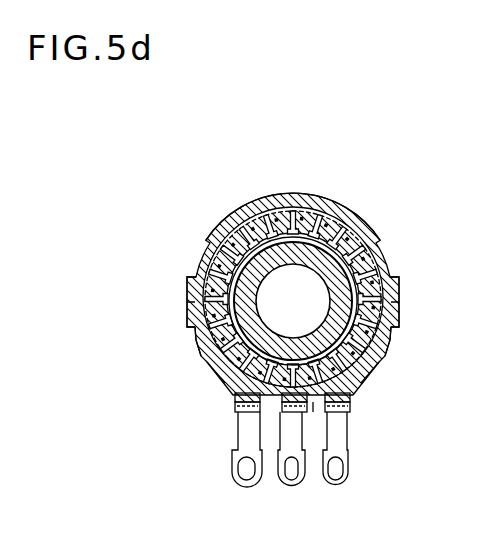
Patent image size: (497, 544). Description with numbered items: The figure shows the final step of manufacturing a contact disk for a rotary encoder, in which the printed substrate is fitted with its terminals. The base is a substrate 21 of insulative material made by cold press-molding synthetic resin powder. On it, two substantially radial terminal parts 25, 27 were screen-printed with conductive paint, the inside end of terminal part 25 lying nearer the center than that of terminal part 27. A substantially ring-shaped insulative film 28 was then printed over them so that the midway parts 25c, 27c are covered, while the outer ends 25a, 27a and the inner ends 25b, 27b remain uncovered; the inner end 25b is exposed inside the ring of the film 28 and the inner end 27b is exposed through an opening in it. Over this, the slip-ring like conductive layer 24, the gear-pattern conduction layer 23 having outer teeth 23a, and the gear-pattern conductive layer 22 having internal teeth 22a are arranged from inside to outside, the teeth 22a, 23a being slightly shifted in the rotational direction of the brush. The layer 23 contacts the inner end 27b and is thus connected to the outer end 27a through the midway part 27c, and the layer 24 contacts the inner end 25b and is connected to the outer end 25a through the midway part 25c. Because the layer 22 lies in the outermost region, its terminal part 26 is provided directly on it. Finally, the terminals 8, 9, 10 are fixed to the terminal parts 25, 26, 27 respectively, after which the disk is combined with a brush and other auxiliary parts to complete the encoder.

The terminal 8 is at (235, 447).
The terminal 9 is at (283, 478).
The terminal 10 is at (347, 440).
The substrate 21 is at (188, 283).
The gear-pattern conductive layer 22 is at (322, 222).
The internal teeth 22a is at (348, 236).
The gear-pattern conduction layer 23 is at (377, 243).
The outer teeth 23a is at (398, 261).
The slip-ring like conductive layer 24 is at (391, 290).
The terminal part 25 is at (238, 398).
The outer end 25a is at (237, 410).
The inner end 25b is at (205, 352).
The midway part 25c is at (225, 383).
The terminal part 26 is at (278, 405).
The terminal part 27 is at (352, 403).
The outer end 27a is at (348, 410).
The inner end 27b is at (381, 358).
The midway part 27c is at (364, 370).
The insulative film 28 is at (290, 196).